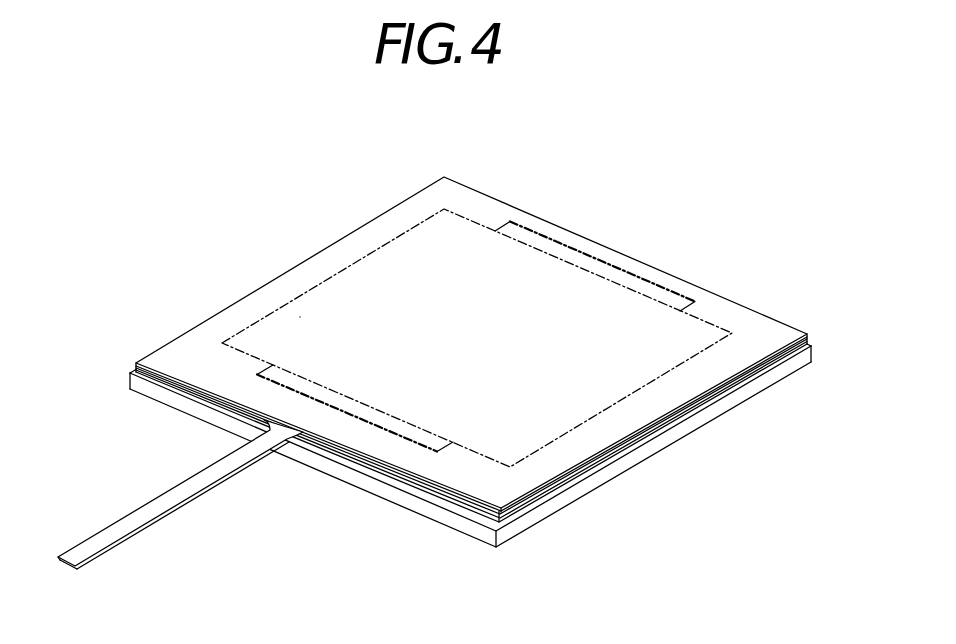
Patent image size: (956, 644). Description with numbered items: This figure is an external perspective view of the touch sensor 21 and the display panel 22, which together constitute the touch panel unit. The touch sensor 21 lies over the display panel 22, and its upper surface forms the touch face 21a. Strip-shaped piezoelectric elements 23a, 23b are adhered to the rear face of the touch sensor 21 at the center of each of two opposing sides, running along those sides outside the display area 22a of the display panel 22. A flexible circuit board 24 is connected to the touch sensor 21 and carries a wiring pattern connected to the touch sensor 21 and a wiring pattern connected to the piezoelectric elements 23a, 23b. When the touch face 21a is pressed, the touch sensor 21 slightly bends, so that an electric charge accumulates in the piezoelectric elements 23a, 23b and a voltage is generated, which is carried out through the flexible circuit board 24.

The touch sensor 21 is at (348, 246).
The touch face 21a is at (300, 317).
The display panel 22 is at (343, 475).
The display area 22a is at (418, 223).
The piezoelectric element 23a is at (438, 452).
The piezoelectric element 23b is at (688, 301).
The flexible circuit board 24 is at (172, 493).